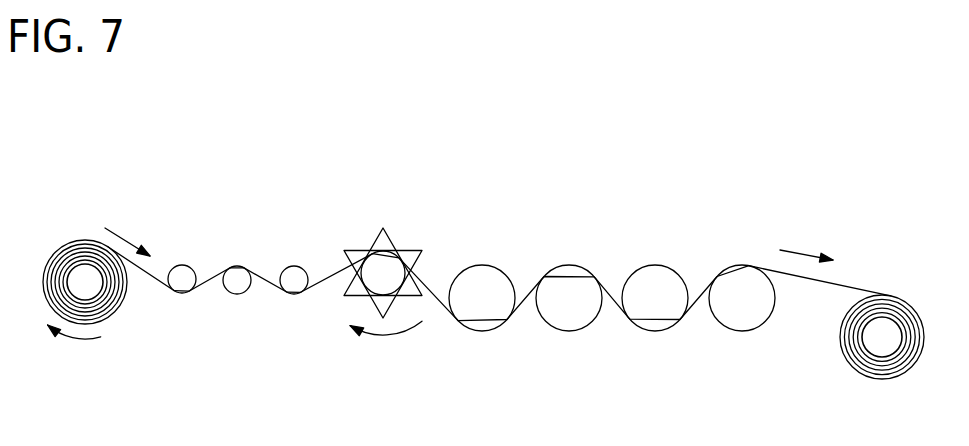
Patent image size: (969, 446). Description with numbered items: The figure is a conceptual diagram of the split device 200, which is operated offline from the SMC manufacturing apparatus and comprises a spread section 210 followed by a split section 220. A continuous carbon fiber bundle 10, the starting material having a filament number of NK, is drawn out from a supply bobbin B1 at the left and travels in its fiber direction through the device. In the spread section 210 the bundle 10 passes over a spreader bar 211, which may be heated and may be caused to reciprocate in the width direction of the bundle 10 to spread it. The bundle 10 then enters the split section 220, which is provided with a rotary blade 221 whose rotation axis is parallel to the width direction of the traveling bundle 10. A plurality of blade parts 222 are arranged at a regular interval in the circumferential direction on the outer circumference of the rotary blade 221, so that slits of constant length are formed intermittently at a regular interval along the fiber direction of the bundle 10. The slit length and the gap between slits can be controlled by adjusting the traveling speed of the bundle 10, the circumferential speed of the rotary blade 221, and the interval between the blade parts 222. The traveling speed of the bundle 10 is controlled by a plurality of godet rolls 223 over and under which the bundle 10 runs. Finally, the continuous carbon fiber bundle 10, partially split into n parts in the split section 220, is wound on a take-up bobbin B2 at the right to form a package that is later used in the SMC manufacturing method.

The supply bobbin B1 is at (87, 243).
The continuous carbon fiber bundle 10 is at (147, 277).
The split device 200 is at (478, 163).
The spread section 210 is at (238, 296).
The spreader bar 211 is at (240, 270).
The split section 220 is at (530, 284).
The rotary blade 221 is at (384, 280).
The blade parts 222 is at (385, 228).
The godet rolls 223 is at (572, 272).
The take-up bobbin B2 is at (875, 342).